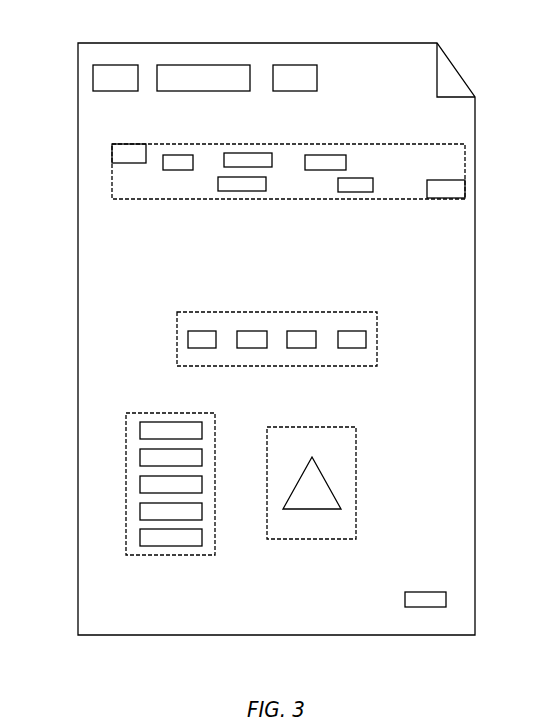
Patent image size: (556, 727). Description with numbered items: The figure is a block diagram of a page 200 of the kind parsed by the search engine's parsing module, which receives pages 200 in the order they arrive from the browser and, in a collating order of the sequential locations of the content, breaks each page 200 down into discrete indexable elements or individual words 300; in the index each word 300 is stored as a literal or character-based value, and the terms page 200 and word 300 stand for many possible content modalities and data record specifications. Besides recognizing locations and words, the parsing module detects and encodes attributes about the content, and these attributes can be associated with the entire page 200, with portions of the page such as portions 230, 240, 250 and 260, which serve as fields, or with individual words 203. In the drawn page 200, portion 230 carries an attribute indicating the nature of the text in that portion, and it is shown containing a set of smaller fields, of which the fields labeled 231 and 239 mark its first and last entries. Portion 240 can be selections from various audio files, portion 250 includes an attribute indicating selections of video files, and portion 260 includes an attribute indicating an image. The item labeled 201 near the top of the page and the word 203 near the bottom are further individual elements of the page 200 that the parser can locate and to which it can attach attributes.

The page 200 is at (78, 512).
The menu button 201 is at (93, 76).
The individual word 203 is at (423, 592).
The portion 230 is at (279, 172).
The toolbar button 231 is at (112, 152).
The toolbar button 239 is at (465, 190).
The portion 240 is at (377, 333).
The portion 250 is at (168, 555).
The portion 260 is at (356, 480).
The word 300 is at (200, 66).